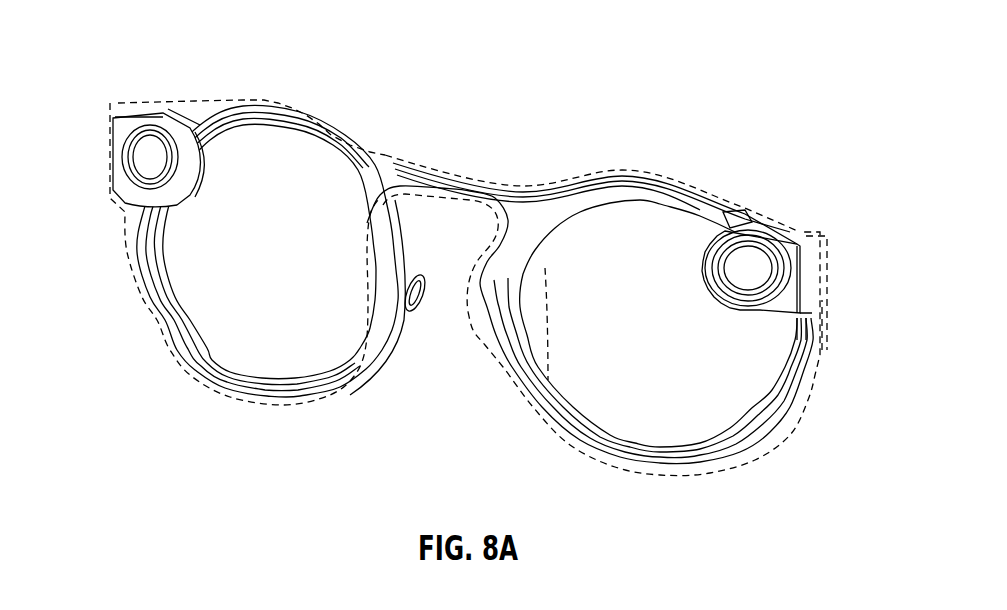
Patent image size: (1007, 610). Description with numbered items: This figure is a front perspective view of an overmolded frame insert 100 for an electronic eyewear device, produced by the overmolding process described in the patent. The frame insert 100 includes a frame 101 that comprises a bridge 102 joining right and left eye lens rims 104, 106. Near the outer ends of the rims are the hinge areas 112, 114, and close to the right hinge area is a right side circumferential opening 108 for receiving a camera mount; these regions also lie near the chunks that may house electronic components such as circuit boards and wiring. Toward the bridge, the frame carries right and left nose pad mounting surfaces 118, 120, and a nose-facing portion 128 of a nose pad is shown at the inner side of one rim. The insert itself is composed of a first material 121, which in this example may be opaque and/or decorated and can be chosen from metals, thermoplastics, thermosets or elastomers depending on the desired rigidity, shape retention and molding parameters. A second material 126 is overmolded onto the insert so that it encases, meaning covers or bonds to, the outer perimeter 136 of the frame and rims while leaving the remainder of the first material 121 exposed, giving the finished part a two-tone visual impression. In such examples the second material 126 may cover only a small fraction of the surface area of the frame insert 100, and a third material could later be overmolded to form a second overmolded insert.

The frame insert 100 is at (549, 50).
The frame 101 is at (281, 67).
The bridge 102 is at (453, 178).
The right eye lens rim 104 is at (141, 277).
The left eye lens rim 106 is at (660, 206).
The right side circumferential opening 108 is at (784, 247).
The hinge area 112 is at (141, 68).
The hinge area 114 is at (810, 253).
The right nose pad mounting surface 118 is at (493, 294).
The left nose pad mounting surface 120 is at (338, 400).
The first material 121 is at (780, 363).
The second material 126 is at (820, 288).
The nose-facing portion of the nose pad 128 is at (420, 307).
The outer perimeter 136 is at (777, 222).